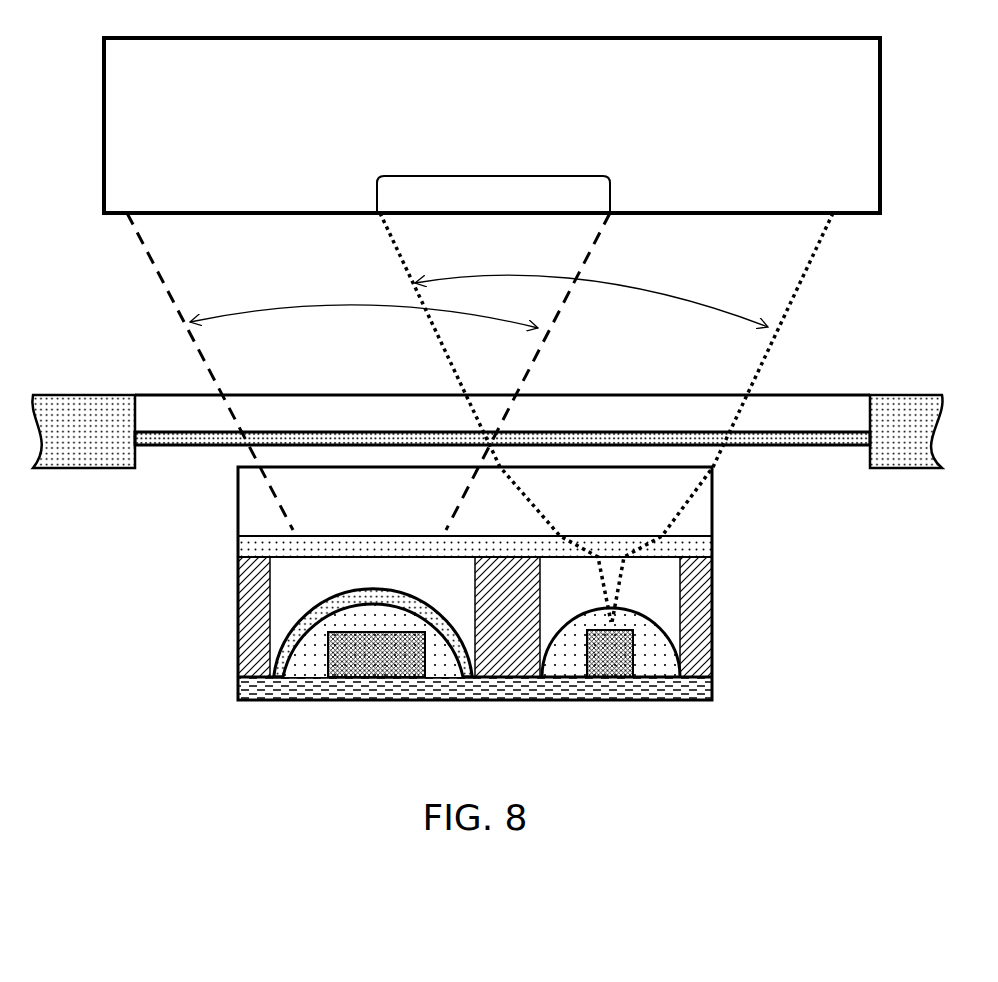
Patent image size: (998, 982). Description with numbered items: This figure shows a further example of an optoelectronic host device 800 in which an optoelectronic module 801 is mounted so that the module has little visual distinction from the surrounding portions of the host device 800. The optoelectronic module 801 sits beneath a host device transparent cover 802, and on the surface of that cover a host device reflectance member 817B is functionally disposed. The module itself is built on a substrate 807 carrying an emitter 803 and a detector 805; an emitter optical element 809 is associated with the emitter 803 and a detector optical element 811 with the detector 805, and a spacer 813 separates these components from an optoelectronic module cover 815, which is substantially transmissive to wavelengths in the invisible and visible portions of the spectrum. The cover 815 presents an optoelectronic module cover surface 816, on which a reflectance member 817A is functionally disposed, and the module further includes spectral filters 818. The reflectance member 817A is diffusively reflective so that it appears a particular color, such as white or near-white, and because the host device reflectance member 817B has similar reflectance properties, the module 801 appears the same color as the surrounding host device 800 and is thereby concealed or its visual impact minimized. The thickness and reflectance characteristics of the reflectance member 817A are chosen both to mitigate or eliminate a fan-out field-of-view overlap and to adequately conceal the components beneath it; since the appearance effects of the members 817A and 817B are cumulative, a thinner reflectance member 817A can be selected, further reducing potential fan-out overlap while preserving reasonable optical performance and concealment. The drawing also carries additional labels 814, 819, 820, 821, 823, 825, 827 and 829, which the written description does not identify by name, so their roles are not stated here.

The host device 800 is at (472, 412).
The optoelectronic module 801 is at (441, 617).
The host device transparent cover 802 is at (188, 422).
The emitter 803 is at (620, 656).
The detector 805 is at (348, 662).
The substrate 807 is at (238, 693).
The emitter optical element 809 is at (650, 622).
The detector optical element 811 is at (290, 665).
The spacer 813 is at (698, 592).
The partition wall 814 is at (488, 652).
The optoelectronic module cover 815 is at (238, 490).
The optoelectronic module cover surface 816 is at (395, 526).
The reflectance member 817A is at (700, 547).
The host device reflectance member 817B is at (762, 440).
The spectral filters 818 is at (322, 602).
The second light beam 819 is at (771, 352).
The support frame 820 is at (72, 455).
The second beam spread 821 is at (670, 290).
The reflector 823 is at (186, 97).
The reflecting surface 825 is at (250, 203).
The first beam spread 827 is at (250, 310).
The reflector aperture 829 is at (421, 176).